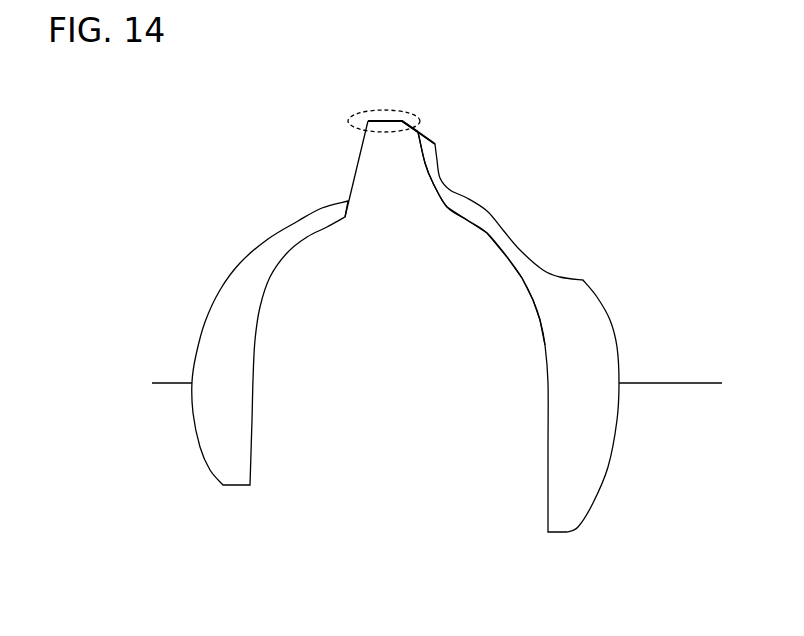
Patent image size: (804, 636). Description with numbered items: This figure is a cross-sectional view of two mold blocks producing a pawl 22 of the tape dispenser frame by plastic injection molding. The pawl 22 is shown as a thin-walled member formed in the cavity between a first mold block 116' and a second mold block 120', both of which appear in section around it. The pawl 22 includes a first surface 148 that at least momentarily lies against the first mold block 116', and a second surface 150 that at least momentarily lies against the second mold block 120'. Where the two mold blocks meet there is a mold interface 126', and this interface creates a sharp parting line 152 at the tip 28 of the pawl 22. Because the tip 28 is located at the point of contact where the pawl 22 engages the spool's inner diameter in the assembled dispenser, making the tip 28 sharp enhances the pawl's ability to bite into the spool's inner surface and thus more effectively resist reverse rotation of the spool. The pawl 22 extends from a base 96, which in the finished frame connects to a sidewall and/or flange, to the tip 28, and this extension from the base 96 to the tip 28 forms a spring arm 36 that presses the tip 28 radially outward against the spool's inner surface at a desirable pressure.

The mold interface 126' is at (351, 81).
The tip 28 is at (418, 132).
The first surface 148 is at (437, 157).
The pawl 22 is at (489, 215).
The first mold block 116' is at (670, 312).
The parting line 152 is at (415, 132).
The second surface 150 is at (425, 168).
The spring arm 36 is at (495, 232).
The base 96 is at (533, 273).
The second mold block 120' is at (286, 403).